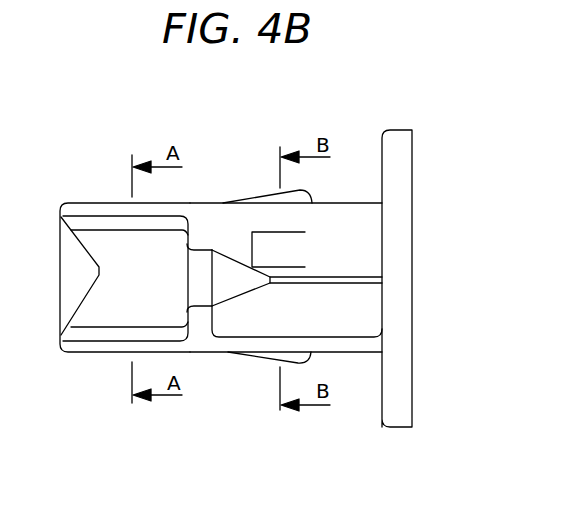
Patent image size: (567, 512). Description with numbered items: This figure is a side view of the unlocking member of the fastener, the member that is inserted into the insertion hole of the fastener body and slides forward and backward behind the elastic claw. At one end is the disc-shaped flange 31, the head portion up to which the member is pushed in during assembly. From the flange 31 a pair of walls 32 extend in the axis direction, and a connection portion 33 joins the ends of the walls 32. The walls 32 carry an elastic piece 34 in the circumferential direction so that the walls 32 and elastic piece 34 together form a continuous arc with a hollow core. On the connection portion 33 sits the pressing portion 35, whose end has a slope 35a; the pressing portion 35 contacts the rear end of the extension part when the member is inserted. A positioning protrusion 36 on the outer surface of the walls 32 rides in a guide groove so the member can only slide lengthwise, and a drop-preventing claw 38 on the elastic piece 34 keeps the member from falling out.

The flange 31 is at (397, 128).
The walls 32 is at (350, 215).
The connection portion 33 is at (208, 275).
The elastic piece 34 is at (350, 265).
The pressing portion 35 is at (107, 308).
The slope 35a is at (93, 266).
The positioning protrusion 36 is at (268, 188).
The drop-preventing claw 38 is at (267, 258).